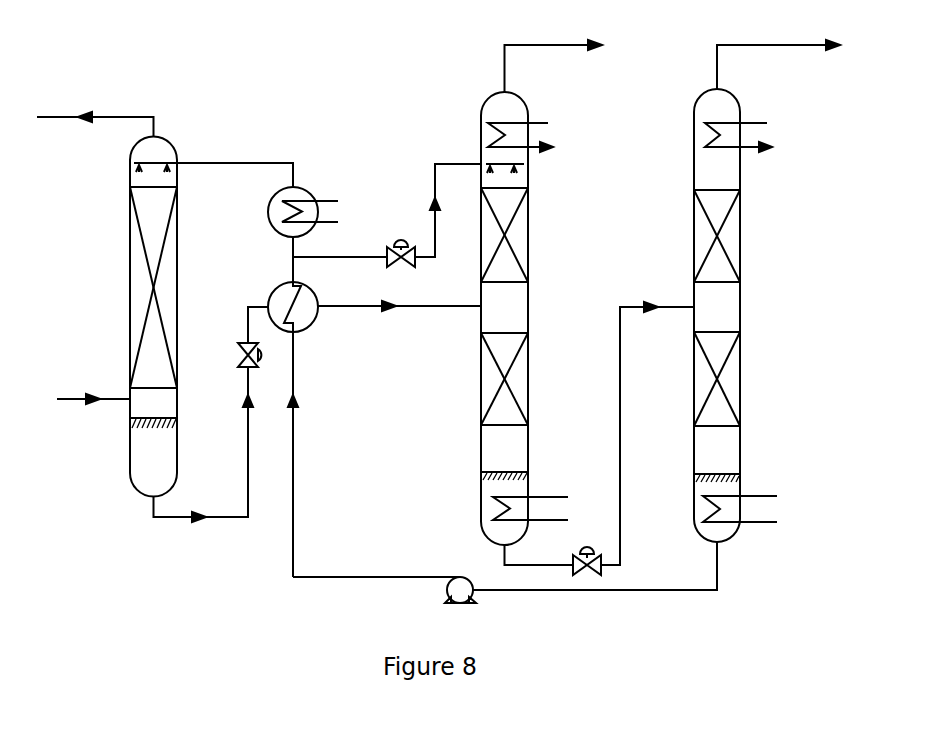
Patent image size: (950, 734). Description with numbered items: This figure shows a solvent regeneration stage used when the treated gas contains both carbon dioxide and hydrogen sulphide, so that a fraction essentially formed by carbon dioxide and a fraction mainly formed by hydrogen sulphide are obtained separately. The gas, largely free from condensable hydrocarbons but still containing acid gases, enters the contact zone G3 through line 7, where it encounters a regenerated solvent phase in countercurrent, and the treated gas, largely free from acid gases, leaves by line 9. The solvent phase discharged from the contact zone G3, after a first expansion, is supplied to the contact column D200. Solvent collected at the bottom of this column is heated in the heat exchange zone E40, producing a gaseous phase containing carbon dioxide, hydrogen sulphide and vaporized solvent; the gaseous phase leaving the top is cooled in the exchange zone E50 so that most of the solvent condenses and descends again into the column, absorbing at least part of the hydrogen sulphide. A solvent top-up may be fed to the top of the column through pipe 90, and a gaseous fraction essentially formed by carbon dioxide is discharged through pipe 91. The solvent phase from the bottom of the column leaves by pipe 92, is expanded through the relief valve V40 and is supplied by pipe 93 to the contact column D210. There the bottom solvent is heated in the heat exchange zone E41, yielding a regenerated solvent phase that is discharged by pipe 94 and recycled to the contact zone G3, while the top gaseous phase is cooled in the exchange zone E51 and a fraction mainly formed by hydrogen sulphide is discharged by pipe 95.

The line 7 is at (73, 398).
The line 9 is at (129, 117).
The contact zone G3 is at (135, 267).
The pipe 90 is at (435, 192).
The pipe 91 is at (548, 45).
The pipe 92 is at (548, 565).
The pipe 93 is at (620, 380).
The pipe 94 is at (720, 578).
The pipe 95 is at (782, 45).
The exchange zone E50 is at (481, 122).
The exchange zone E51 is at (694, 126).
The heat exchange zone E40 is at (481, 476).
The heat exchange zone E41 is at (697, 494).
The contact column D200 is at (522, 291).
The contact column D210 is at (742, 293).
The relief valve V40 is at (588, 545).